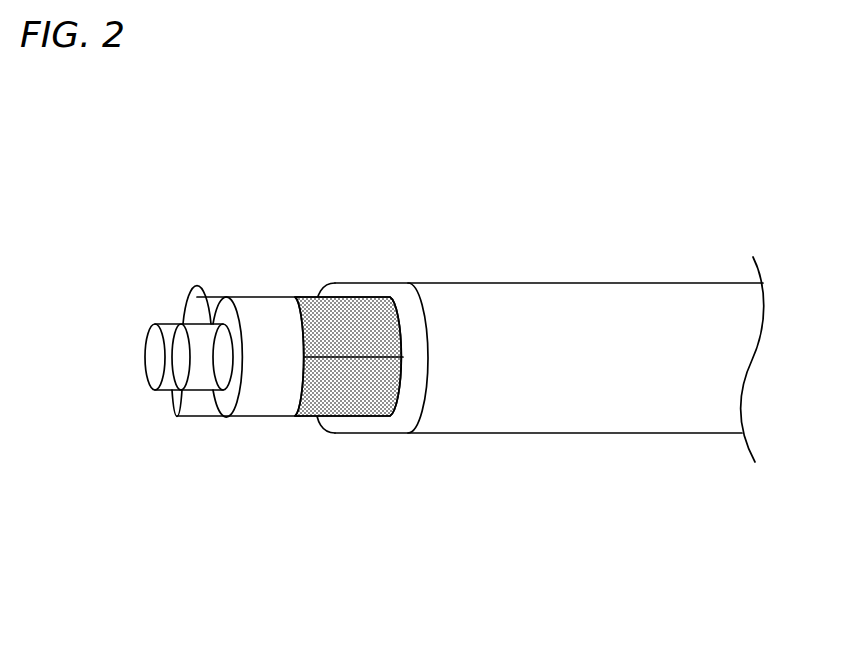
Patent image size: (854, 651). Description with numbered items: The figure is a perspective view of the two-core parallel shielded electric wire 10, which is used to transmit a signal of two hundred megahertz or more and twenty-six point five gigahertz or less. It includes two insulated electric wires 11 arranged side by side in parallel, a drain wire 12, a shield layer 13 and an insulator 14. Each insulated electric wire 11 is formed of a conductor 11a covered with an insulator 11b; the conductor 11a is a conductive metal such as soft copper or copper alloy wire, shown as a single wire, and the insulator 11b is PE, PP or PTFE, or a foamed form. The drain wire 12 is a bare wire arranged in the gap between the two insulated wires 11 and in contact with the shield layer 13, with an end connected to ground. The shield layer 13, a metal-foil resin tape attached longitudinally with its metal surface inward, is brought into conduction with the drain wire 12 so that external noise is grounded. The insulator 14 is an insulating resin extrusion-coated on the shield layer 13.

The two-core parallel shielded electric wire 10 is at (660, 194).
The insulated electric wire 11 is at (228, 185).
The conductor 11a is at (153, 345).
The insulator 11b is at (200, 315).
The drain wire 12 is at (188, 405).
The shield layer 13 is at (352, 325).
The insulator 14 is at (533, 405).